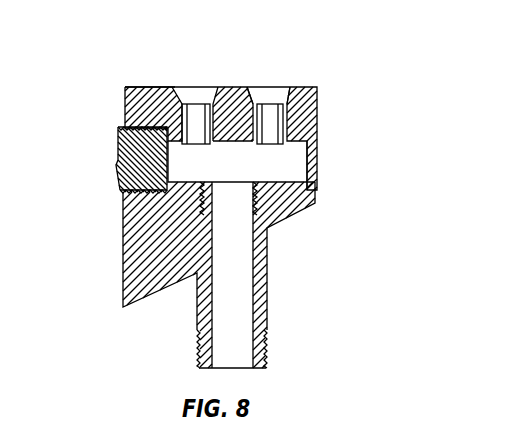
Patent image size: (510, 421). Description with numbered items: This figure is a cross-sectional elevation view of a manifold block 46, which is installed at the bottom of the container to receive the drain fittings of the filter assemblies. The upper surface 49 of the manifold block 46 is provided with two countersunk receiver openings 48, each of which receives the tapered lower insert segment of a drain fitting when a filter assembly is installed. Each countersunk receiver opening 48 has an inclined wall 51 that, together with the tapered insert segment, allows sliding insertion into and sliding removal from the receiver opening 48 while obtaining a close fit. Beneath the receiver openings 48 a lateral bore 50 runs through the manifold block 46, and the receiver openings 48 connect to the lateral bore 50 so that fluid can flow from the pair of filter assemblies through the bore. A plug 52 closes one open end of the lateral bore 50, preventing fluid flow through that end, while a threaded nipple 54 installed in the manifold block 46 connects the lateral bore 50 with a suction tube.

The manifold block 46 is at (303, 89).
The countersunk receiver opening 48 is at (197, 113).
The upper surface 49 is at (142, 85).
The lateral bore 50 is at (237, 160).
The inclined wall 51 is at (290, 88).
The plug 52 is at (118, 175).
The threaded nipple 54 is at (267, 265).